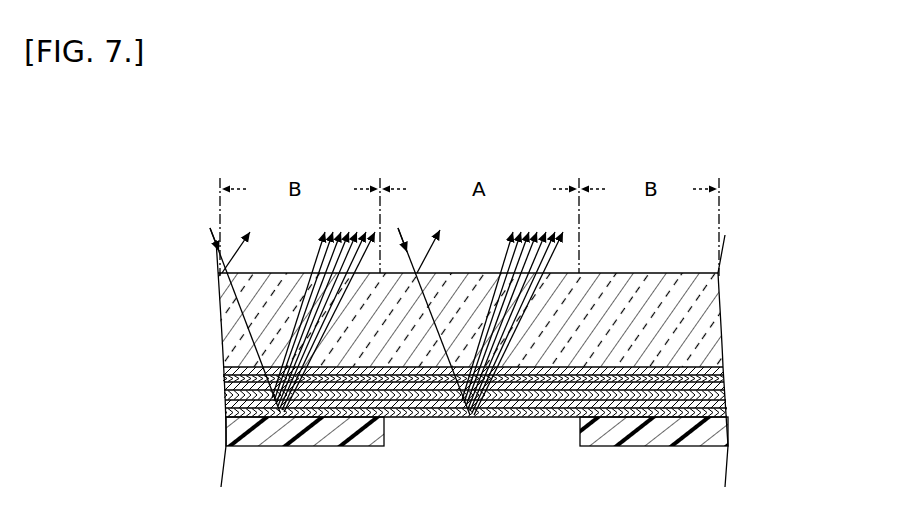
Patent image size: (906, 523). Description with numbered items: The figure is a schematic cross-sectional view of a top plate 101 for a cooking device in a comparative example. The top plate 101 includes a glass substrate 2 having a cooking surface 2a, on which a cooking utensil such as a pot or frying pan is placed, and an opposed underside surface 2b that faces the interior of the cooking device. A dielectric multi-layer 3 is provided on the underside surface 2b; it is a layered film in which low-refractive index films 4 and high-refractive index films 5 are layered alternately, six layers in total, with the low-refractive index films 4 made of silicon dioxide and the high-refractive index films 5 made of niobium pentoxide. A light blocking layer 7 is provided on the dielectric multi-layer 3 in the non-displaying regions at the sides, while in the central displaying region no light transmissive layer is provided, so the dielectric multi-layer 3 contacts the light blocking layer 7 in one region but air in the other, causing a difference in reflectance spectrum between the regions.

The top plate for a cooking device 101 is at (301, 122).
The glass substrate 2 is at (700, 320).
The cooking surface 2a is at (280, 273).
The underside surface 2b is at (637, 367).
The dielectric multi-layer 3 is at (768, 348).
The low-refractive index film 4 is at (727, 371).
The high-refractive index film 5 is at (727, 378).
The light blocking layer 7 is at (320, 446).